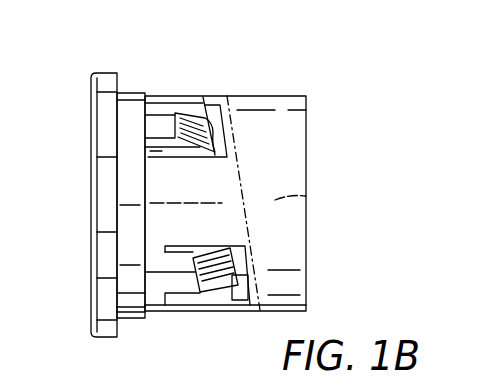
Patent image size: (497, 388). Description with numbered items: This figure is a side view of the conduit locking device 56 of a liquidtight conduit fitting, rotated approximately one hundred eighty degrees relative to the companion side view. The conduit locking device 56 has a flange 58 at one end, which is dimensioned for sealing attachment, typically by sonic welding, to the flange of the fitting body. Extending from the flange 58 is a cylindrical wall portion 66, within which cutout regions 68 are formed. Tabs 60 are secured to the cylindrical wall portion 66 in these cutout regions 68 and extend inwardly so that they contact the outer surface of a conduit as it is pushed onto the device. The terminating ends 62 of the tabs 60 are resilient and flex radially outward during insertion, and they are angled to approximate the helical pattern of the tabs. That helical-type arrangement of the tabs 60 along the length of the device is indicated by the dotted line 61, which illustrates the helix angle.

The conduit locking device 56 is at (70, 127).
The flange 58 is at (103, 80).
The tabs 60 is at (203, 293).
The dotted line 61 is at (308, 198).
The terminating ends 62 is at (205, 98).
The cylindrical wall portion 66 is at (288, 108).
The cutout regions 68 is at (230, 300).